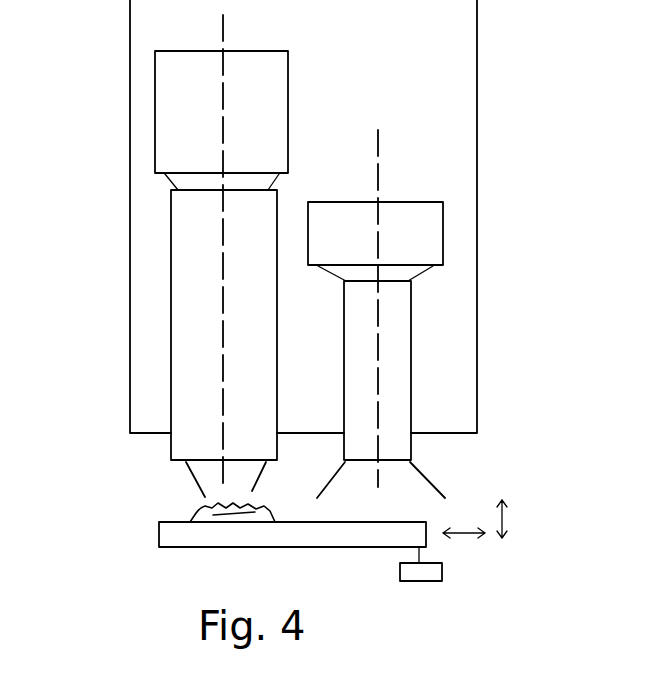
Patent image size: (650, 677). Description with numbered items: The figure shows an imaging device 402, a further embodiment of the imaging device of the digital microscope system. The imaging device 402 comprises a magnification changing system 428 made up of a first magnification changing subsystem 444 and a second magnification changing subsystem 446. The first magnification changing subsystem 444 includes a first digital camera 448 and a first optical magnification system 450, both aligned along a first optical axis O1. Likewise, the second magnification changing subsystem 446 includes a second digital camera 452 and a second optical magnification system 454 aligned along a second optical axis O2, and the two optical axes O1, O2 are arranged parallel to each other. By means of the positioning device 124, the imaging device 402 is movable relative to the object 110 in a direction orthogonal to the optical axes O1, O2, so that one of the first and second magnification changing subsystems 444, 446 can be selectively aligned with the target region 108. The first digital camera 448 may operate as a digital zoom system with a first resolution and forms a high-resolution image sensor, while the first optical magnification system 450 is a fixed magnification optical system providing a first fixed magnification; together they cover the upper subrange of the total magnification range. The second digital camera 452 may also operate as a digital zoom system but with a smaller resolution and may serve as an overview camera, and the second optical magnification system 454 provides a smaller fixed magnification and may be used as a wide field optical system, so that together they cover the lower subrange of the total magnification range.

The imaging device 402 is at (476, 158).
The first magnification changing subsystem 444 is at (169, 255).
The first digital camera 448 is at (155, 121).
The first optical magnification system 450 is at (172, 262).
The magnification changing system 428 is at (433, 268).
The second digital camera 452 is at (443, 241).
The second magnification changing subsystem 446 is at (440, 295).
The second optical magnification system 454 is at (413, 423).
The target region 108 is at (218, 506).
The object 110 is at (277, 512).
The positioning device 124 is at (443, 577).
The first optical axis O1 is at (222, 30).
The second optical axis O2 is at (383, 145).